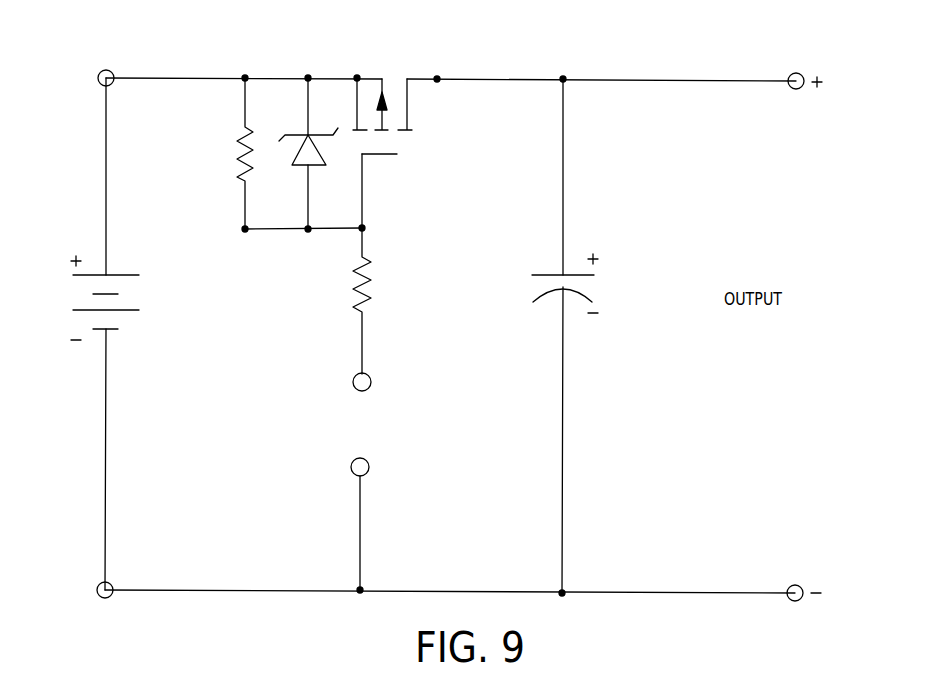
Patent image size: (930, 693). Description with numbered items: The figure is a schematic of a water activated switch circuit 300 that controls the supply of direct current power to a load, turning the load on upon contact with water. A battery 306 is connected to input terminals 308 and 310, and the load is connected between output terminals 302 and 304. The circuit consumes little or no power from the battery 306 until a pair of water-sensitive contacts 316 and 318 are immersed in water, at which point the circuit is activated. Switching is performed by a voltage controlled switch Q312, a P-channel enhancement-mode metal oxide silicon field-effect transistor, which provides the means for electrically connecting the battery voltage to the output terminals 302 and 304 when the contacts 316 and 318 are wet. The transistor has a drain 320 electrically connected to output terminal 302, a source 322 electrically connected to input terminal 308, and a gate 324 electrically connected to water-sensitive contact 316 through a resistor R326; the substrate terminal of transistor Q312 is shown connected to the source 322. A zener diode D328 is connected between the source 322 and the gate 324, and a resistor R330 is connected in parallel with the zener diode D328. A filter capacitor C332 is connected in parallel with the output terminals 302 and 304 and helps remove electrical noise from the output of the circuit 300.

The water activated switch circuit 300 is at (578, 66).
The output terminal 302 is at (789, 75).
The output terminal 304 is at (790, 600).
The battery 306 is at (120, 298).
The input terminal 308 is at (113, 72).
The input terminal 310 is at (113, 584).
The voltage controlled switch Q312 is at (400, 153).
The water-sensitive contact 316 is at (362, 337).
The water-sensitive contact 318 is at (360, 527).
The drain 320 is at (437, 75).
The source 322 is at (357, 74).
The gate 324 is at (366, 228).
The resistor R326 is at (384, 301).
The zener diode D328 is at (301, 153).
The resistor R330 is at (221, 153).
The filter capacitor C332 is at (542, 283).